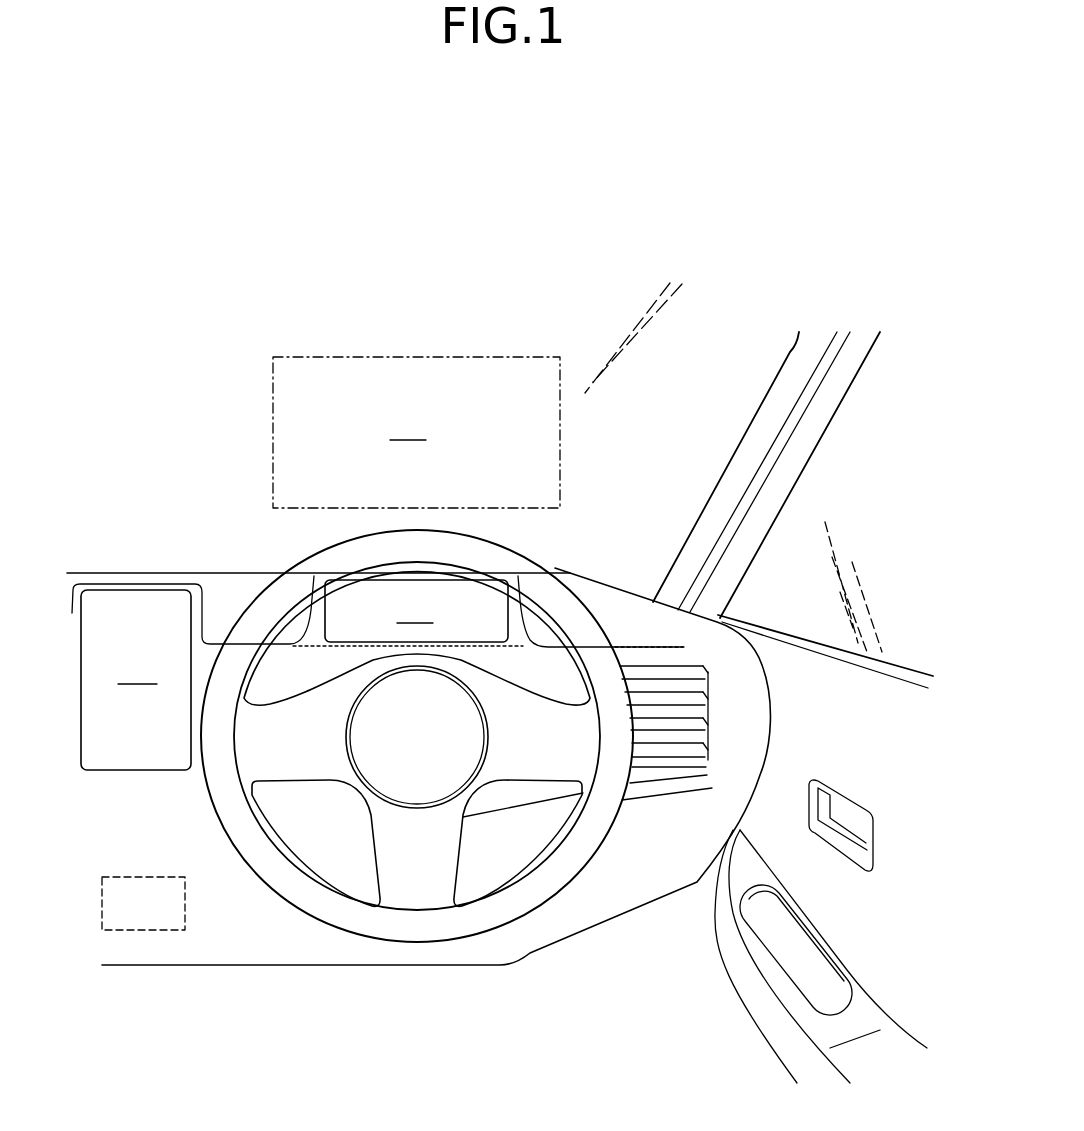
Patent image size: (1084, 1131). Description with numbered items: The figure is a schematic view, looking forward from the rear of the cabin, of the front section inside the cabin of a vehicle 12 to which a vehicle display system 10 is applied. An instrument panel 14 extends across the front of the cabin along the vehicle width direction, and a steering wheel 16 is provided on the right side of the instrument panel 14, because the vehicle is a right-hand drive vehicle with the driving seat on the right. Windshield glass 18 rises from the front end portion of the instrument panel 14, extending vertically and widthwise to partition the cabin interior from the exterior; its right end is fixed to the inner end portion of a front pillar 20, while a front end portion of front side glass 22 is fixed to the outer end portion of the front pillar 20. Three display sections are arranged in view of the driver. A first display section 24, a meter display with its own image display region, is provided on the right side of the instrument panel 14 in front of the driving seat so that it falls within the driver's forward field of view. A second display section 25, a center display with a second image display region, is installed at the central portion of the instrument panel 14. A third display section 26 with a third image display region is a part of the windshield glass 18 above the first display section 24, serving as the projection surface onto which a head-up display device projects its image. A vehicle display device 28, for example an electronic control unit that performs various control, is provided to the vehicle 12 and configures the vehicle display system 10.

The vehicle display system 10 is at (360, 314).
The vehicle 12 is at (401, 218).
The instrument panel 14 is at (615, 918).
The steering wheel 16 is at (593, 612).
The windshield glass 18 is at (703, 447).
The front pillar 20 is at (778, 377).
The front side glass 22 is at (902, 616).
The first display section 24 is at (357, 605).
The second display section 25 is at (138, 749).
The third display section 26 is at (417, 357).
The vehicle display device 28 is at (135, 931).